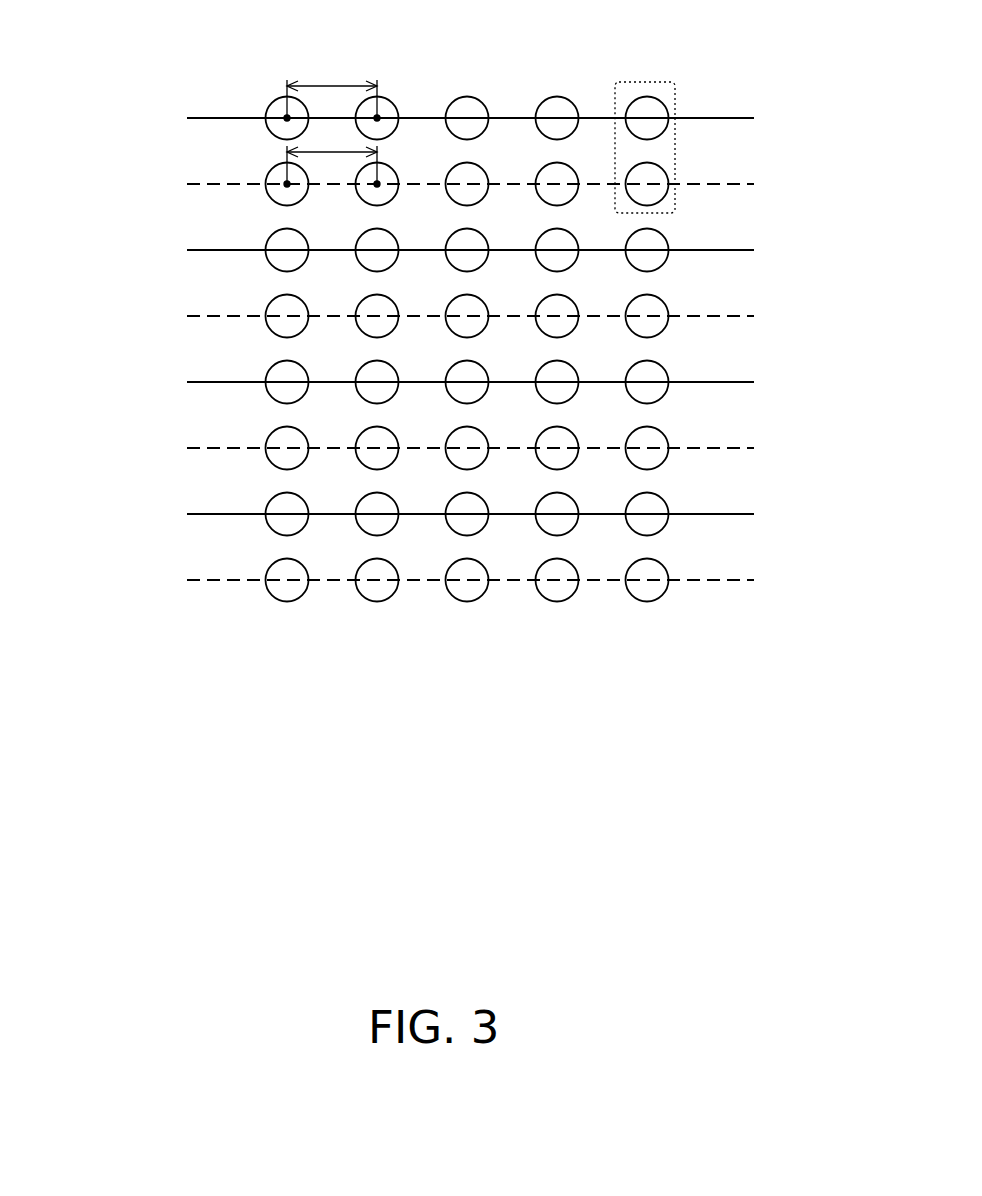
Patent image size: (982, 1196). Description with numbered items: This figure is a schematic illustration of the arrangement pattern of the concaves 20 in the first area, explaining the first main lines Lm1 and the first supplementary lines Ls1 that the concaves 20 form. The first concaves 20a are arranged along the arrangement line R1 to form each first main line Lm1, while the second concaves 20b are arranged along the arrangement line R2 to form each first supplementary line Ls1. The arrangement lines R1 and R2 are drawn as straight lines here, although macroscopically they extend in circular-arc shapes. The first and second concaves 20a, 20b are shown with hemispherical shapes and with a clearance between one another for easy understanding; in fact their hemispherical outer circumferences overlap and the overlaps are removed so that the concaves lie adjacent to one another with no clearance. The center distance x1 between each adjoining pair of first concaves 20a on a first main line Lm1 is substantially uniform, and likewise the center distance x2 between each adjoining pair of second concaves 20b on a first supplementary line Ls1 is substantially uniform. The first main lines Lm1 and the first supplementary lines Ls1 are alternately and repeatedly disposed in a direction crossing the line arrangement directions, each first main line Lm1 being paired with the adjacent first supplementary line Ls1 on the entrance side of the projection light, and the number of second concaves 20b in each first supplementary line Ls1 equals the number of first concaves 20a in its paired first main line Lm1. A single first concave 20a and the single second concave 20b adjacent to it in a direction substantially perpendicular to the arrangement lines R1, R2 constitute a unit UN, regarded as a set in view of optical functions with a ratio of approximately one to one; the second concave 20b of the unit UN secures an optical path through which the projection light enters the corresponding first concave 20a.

The concaves 20 is at (662, 98).
The first concave 20a is at (271, 100).
The second concave 20b is at (267, 178).
The first main line Lm1 is at (152, 115).
The first supplementary line Ls1 is at (152, 181).
The arrangement line R1 is at (444, 289).
The arrangement line R2 is at (460, 365).
The unit UN is at (647, 82).
The center distance x1 is at (327, 84).
The center distance x2 is at (320, 151).